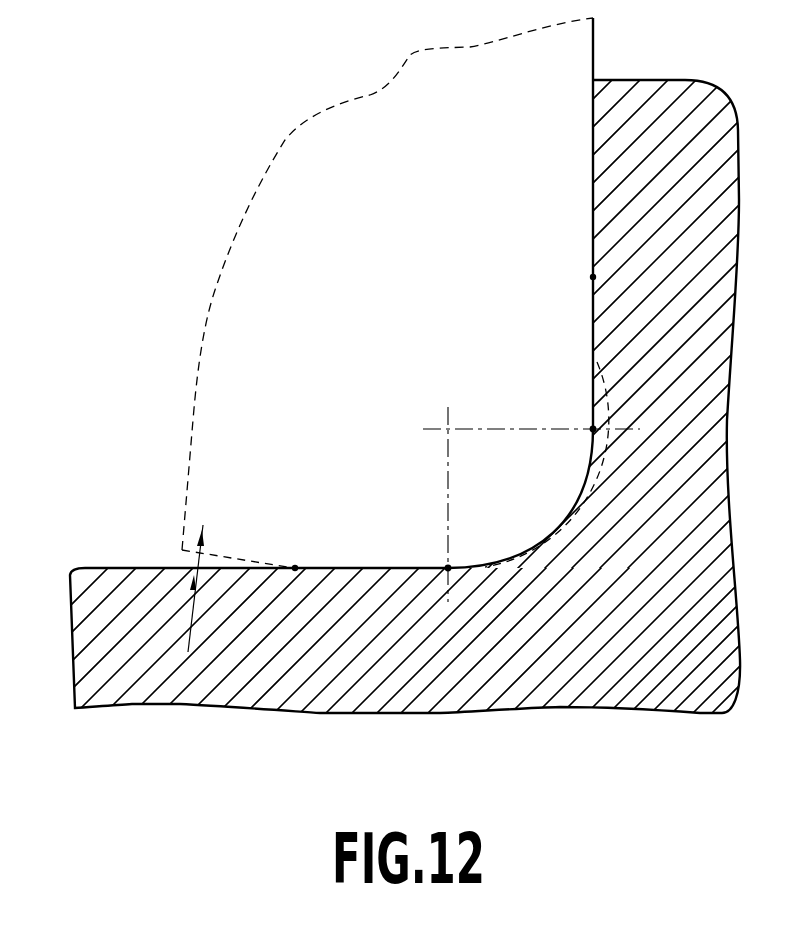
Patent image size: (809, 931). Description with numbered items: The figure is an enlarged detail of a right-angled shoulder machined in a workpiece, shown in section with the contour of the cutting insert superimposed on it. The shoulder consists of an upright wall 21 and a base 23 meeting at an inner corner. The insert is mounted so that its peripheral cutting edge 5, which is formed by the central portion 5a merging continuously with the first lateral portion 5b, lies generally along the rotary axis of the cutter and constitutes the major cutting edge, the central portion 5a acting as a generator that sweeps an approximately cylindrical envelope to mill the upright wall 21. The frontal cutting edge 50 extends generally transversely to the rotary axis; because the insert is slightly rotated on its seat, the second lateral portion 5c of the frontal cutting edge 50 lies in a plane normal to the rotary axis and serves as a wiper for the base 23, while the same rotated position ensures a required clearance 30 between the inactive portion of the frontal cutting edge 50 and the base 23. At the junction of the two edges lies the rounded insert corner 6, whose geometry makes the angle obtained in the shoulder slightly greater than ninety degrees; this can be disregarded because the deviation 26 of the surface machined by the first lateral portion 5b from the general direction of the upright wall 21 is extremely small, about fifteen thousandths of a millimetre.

The peripheral cutting edge 5 is at (592, 135).
The central portion of the cutting edge 5a is at (593, 213).
The first lateral cutting edge portion 5b is at (593, 363).
The second lateral cutting edge portion 5c is at (379, 572).
The insert corner 6 is at (547, 531).
The upright wall 21 is at (593, 243).
The base of the shoulder 23 is at (421, 575).
The deviation 26 is at (593, 429).
The clearance 30 is at (190, 564).
The frontal cutting edge 50 is at (330, 567).